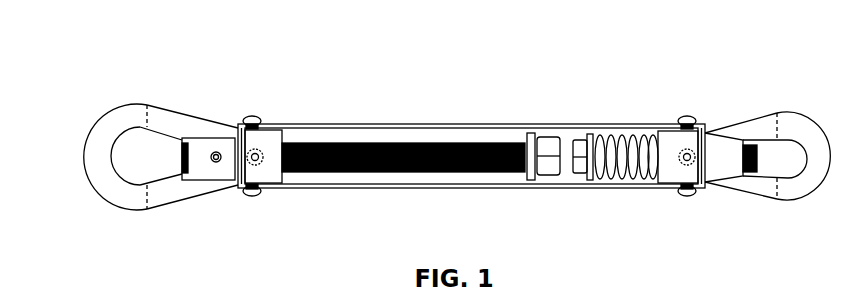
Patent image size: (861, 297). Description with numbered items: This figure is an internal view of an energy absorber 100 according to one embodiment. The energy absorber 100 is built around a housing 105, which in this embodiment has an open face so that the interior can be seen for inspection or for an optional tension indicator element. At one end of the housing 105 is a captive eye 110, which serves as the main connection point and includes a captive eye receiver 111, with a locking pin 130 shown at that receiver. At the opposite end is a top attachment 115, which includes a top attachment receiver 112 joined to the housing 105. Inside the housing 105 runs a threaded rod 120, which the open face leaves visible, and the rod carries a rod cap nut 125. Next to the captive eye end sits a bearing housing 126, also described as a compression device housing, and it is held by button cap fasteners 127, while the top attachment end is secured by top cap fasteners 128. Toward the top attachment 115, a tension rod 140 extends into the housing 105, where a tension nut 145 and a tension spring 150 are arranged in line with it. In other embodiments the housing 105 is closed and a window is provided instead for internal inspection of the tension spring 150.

The energy absorber 100 is at (683, 55).
The housing 105 is at (438, 123).
The captive eye 110 is at (107, 117).
The captive eye receiver 111 is at (197, 162).
The top attachment receiver 112 is at (717, 158).
The top attachment 115 is at (787, 112).
The threaded rod 120 is at (353, 140).
The rod cap nut 125 is at (542, 137).
The bearing housing 126 is at (270, 137).
The button cap fasteners 127 is at (253, 118).
The top cap fasteners 128 is at (687, 120).
The locking pin 130 is at (216, 163).
The tension rod 140 is at (750, 168).
The tension nut 145 is at (583, 165).
The tension spring 150 is at (628, 178).